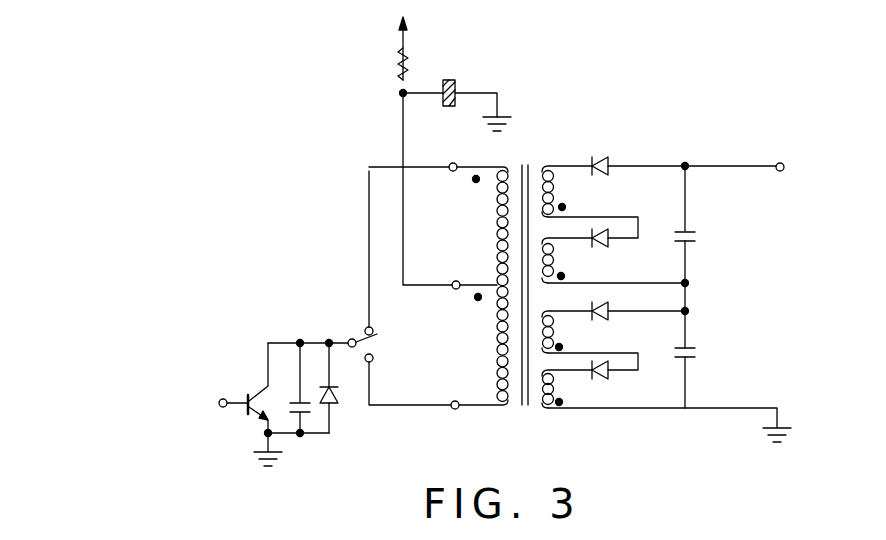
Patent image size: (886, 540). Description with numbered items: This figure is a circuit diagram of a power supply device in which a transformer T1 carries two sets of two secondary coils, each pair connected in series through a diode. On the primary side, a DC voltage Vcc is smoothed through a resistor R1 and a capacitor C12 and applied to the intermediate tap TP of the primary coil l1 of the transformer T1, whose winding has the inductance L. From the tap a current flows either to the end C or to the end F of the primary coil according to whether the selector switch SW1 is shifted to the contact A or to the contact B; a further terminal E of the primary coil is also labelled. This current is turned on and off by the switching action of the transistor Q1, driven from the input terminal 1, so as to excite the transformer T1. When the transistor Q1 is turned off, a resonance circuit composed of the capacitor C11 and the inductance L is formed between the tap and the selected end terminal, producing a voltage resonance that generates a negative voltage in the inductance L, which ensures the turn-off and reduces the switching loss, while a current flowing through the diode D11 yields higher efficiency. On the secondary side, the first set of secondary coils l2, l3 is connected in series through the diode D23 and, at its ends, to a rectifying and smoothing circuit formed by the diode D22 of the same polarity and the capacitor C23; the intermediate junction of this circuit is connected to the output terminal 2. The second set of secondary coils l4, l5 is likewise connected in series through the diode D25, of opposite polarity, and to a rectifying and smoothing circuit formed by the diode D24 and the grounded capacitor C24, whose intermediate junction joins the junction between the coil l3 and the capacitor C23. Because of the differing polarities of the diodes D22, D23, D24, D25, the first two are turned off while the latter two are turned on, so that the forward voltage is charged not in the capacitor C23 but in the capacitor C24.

The input terminal 1 is at (220, 401).
The output terminal 2 is at (780, 163).
The DC voltage Vcc is at (422, 40).
The resistor R1 is at (399, 62).
The capacitor C12 is at (451, 80).
The transformer T1 is at (522, 163).
The primary coil l1 is at (496, 240).
The inductance L is at (474, 182).
The intermediate tap TP is at (478, 301).
The end terminal C is at (449, 165).
The terminal E is at (452, 289).
The end terminal F is at (452, 401).
The contact A is at (373, 332).
The contact B is at (373, 360).
The selector switch SW1 is at (349, 340).
The transistor Q1 is at (264, 388).
The capacitor C11 is at (308, 410).
The diode D11 is at (338, 395).
The secondary coil l2 is at (560, 190).
The secondary coil l3 is at (555, 268).
The secondary coil l4 is at (555, 338).
The secondary coil l5 is at (555, 393).
The diode D22 is at (598, 160).
The diode D23 is at (608, 245).
The diode D24 is at (606, 318).
The diode D25 is at (606, 377).
The capacitor C23 is at (698, 237).
The capacitor C24 is at (698, 352).